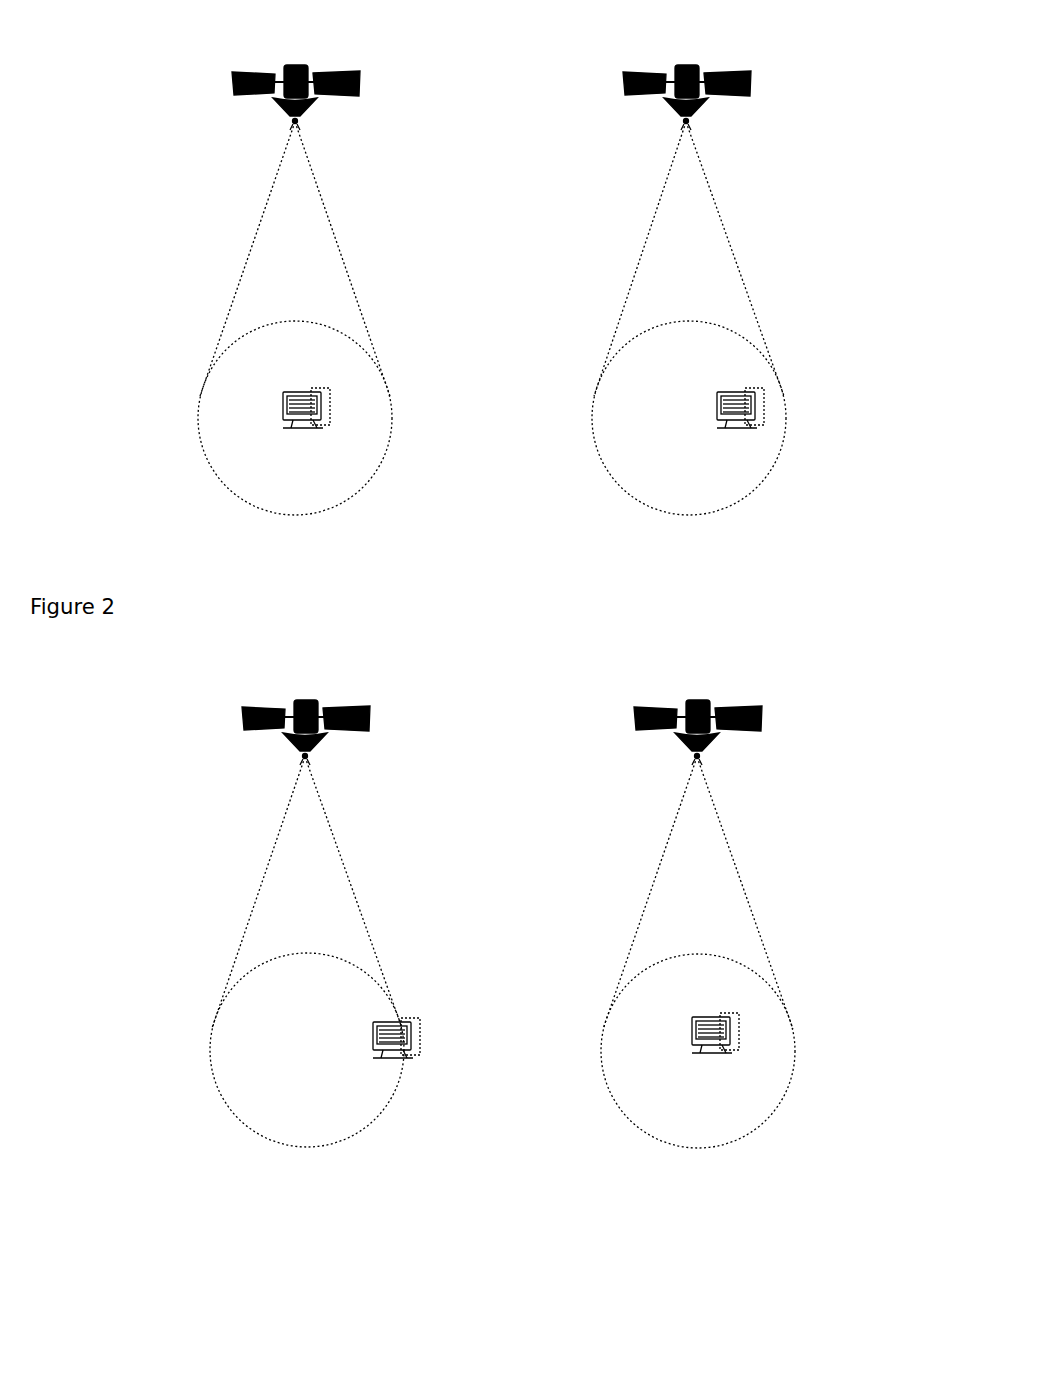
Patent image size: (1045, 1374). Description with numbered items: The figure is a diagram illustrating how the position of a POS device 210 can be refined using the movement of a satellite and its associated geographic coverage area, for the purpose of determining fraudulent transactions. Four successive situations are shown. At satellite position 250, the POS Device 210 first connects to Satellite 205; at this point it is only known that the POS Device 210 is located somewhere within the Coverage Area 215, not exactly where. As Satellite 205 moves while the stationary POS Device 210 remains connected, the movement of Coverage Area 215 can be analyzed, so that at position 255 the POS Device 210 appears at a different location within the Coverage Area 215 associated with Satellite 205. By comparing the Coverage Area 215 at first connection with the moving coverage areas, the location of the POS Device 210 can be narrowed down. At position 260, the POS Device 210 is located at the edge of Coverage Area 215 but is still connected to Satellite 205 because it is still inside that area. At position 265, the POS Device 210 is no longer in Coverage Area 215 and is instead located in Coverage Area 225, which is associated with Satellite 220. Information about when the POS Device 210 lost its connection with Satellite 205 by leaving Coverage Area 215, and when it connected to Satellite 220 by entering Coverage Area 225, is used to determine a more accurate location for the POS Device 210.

The satellite 205 is at (535, 390).
The POS device 210 is at (815, 1010).
The coverage area 215 is at (372, 478).
The satellite 220 is at (742, 711).
The coverage area 225 is at (775, 1110).
The satellite position 250 is at (208, 262).
The position 255 is at (795, 193).
The position 260 is at (232, 958).
The position 265 is at (812, 930).